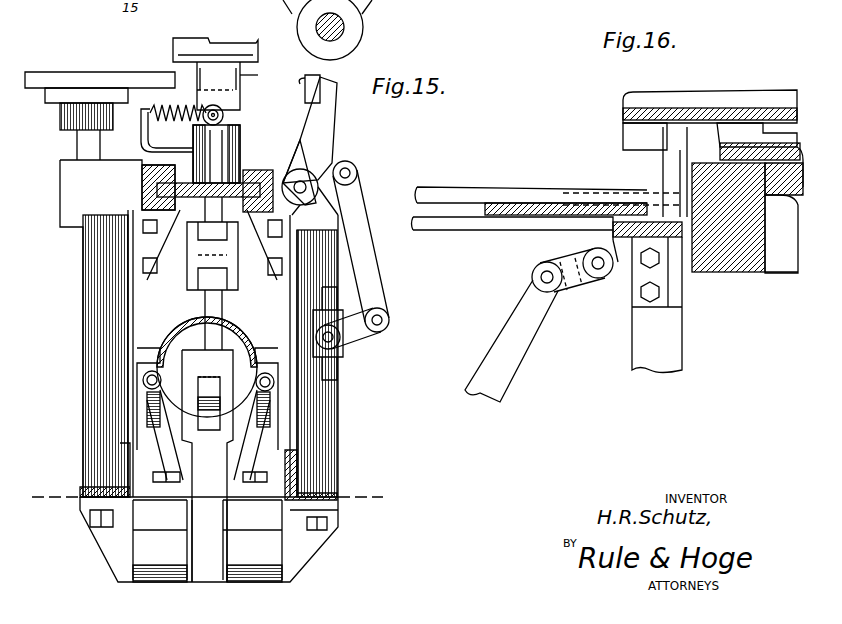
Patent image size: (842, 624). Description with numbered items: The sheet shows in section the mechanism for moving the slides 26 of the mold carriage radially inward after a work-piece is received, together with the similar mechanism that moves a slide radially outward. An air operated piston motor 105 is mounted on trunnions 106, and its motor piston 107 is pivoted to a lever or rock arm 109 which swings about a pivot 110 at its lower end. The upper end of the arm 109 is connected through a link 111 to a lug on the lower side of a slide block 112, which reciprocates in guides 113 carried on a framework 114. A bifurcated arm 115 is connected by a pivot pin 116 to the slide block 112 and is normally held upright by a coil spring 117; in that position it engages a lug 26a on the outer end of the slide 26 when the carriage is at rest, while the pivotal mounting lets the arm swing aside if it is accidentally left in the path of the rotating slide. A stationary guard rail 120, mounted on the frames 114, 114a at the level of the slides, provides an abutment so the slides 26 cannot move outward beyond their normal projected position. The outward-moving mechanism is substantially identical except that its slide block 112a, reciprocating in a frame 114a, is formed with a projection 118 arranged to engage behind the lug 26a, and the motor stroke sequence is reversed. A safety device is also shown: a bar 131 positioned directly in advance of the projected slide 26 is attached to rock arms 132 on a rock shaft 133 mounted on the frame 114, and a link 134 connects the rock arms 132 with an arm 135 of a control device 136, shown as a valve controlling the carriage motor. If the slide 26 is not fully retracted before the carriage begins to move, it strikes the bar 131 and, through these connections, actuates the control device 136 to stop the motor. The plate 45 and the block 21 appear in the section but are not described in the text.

In FIG. 15, the stationary guard rail 120 is at (33, 78).
In FIG. 15, the coil spring 117 is at (165, 100).
In FIG. 15, the slide 26 is at (253, 55).
In FIG. 16, the slide 26 is at (690, 108).
In FIG. 15, the lug 26a is at (240, 73).
In FIG. 16, the lug 26a is at (630, 133).
In FIG. 15, the bifurcated arm 115 is at (243, 84).
In FIG. 15, the pivot pin 116 is at (240, 130).
In FIG. 15, the slide block 112 is at (236, 176).
In FIG. 15, the guides 113 is at (245, 175).
In FIG. 15, the bar 131 is at (317, 82).
In FIG. 15, the rock arms 132 is at (330, 135).
In FIG. 15, the rock shaft 133 is at (304, 185).
In FIG. 15, the link 134 is at (372, 252).
In FIG. 15, the arm 135 is at (363, 335).
In FIG. 15, the control device 136 is at (345, 358).
In FIG. 15, the pivot 110 is at (342, 30).
In FIG. 15, the framework 114 is at (93, 250).
In FIG. 15, the link 111 is at (190, 268).
In FIG. 16, the link 111 is at (570, 288).
In FIG. 15, the lever or rock arm 109 is at (205, 300).
In FIG. 16, the lever or rock arm 109 is at (525, 347).
In FIG. 15, the air operated piston motor 105 is at (182, 327).
In FIG. 15, the trunnions 106 is at (140, 368).
In FIG. 15, the motor piston 107 is at (203, 402).
In FIG. 16, the plate 45 is at (742, 145).
In FIG. 16, the projection 118 is at (673, 171).
In FIG. 16, the frame 114a is at (452, 201).
In FIG. 16, the slide block 112a is at (512, 201).
In FIG. 16, the block 21 is at (731, 268).